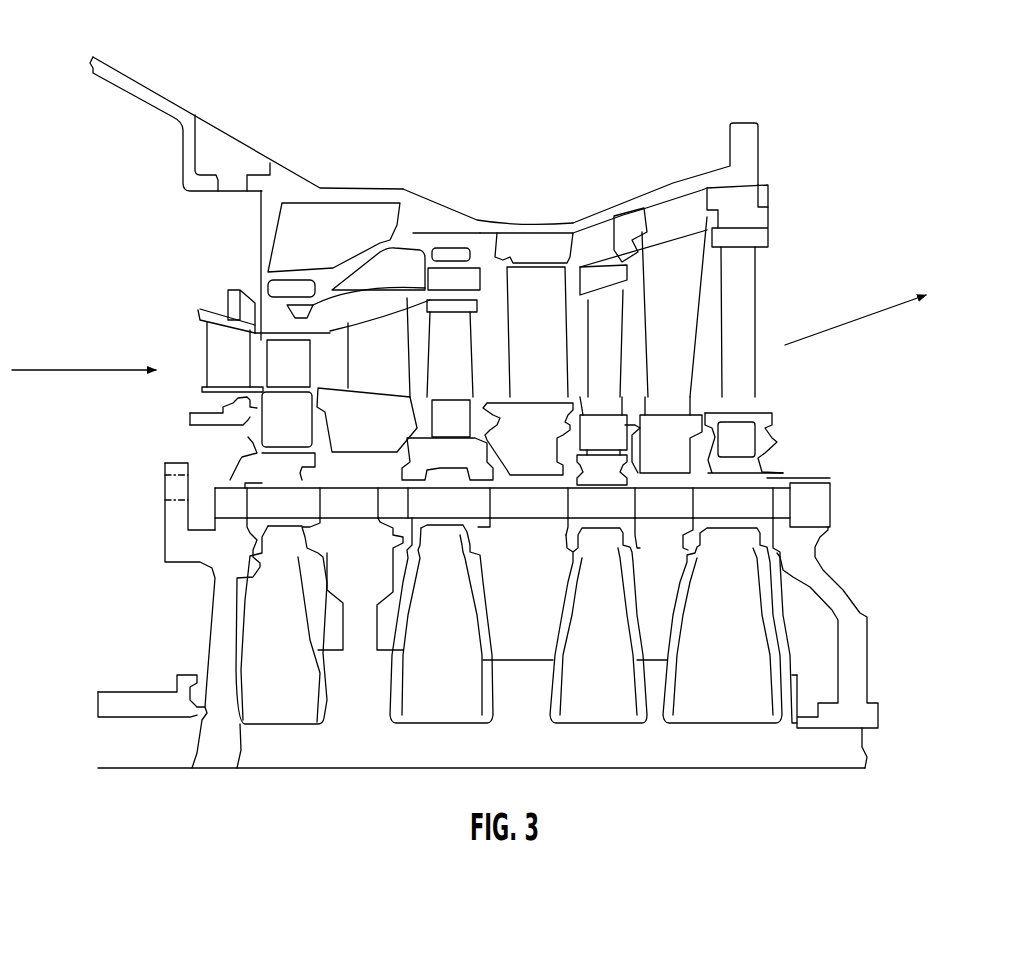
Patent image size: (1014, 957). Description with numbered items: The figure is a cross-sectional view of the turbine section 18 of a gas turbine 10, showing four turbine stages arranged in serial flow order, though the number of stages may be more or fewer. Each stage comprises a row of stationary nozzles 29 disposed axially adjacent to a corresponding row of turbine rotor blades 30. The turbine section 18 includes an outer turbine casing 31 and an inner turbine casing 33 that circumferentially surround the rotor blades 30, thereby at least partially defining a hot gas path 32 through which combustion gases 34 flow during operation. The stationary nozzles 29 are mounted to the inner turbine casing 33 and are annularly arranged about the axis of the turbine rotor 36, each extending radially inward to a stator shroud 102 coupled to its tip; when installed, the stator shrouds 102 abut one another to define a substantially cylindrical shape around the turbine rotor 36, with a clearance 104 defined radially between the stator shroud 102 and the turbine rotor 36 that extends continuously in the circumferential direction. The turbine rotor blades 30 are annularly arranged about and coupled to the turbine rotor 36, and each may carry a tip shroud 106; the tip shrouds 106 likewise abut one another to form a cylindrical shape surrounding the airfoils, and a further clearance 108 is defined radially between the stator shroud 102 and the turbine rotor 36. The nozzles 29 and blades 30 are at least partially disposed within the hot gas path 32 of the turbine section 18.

The gas turbine 10 is at (624, 192).
The turbine section 18 is at (246, 101).
The stationary nozzles 29 is at (527, 307).
The turbine rotor blades 30 is at (530, 367).
The outer turbine casing 31 is at (342, 232).
The hot gas path 32 is at (229, 335).
The inner turbine casing 33 is at (486, 176).
The combustion gases 34 is at (469, 333).
The turbine rotor 36 is at (488, 655).
The stator shroud 102 is at (509, 431).
The clearance 104 is at (480, 612).
The tip shroud 106 is at (660, 216).
The clearance 108 is at (635, 202).